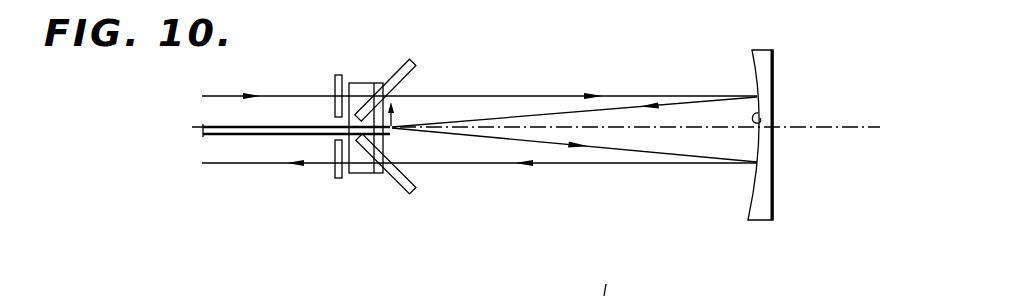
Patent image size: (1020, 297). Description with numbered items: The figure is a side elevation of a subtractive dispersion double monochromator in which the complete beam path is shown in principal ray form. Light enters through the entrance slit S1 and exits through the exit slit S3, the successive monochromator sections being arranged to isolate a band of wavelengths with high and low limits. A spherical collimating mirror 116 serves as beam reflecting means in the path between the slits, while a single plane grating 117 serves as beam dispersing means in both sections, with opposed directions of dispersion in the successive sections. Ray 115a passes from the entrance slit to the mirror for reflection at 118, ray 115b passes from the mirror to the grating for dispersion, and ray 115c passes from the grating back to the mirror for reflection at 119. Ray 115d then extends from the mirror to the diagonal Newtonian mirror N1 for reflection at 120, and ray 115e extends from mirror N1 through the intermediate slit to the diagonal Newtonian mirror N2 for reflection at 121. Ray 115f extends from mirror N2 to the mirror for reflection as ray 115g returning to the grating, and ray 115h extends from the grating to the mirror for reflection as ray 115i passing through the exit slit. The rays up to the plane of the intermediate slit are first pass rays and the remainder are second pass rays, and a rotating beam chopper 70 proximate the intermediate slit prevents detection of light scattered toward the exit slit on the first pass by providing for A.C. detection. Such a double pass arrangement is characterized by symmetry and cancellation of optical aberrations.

The rotating beam chopper 70 is at (263, 136).
The entrance slit S1 is at (325, 89).
The exit slit S3 is at (325, 173).
The single plane grating 117 is at (362, 82).
The diagonal Newtonian mirror N2 is at (400, 84).
The diagonal Newtonian mirror N1 is at (389, 176).
The reflection at mirror N2 121 is at (393, 92).
The reflection at mirror N1 120 is at (403, 162).
The ray extending from mirror N1 through slit S2 to mirror N2 115e is at (394, 143).
The ray passing from S1 to the mirror 115a is at (479, 61).
The ray extending from mirror N2 to the mirror 115f is at (562, 95).
The ray passing from the mirror to the grating 115b is at (574, 98).
The ray returning to the grating 115g is at (600, 107).
The ray passing from the grating to the mirror 115c is at (574, 160).
The ray extending from the grating to the mirror 115h is at (638, 152).
The ray extending from the mirror to mirror N1 115d is at (479, 202).
The ray passing through slit S3 115i is at (575, 166).
The reflection at the mirror 118 is at (757, 96).
The spherical collimating mirror 116 is at (760, 122).
The reflection at the mirror 119 is at (756, 163).